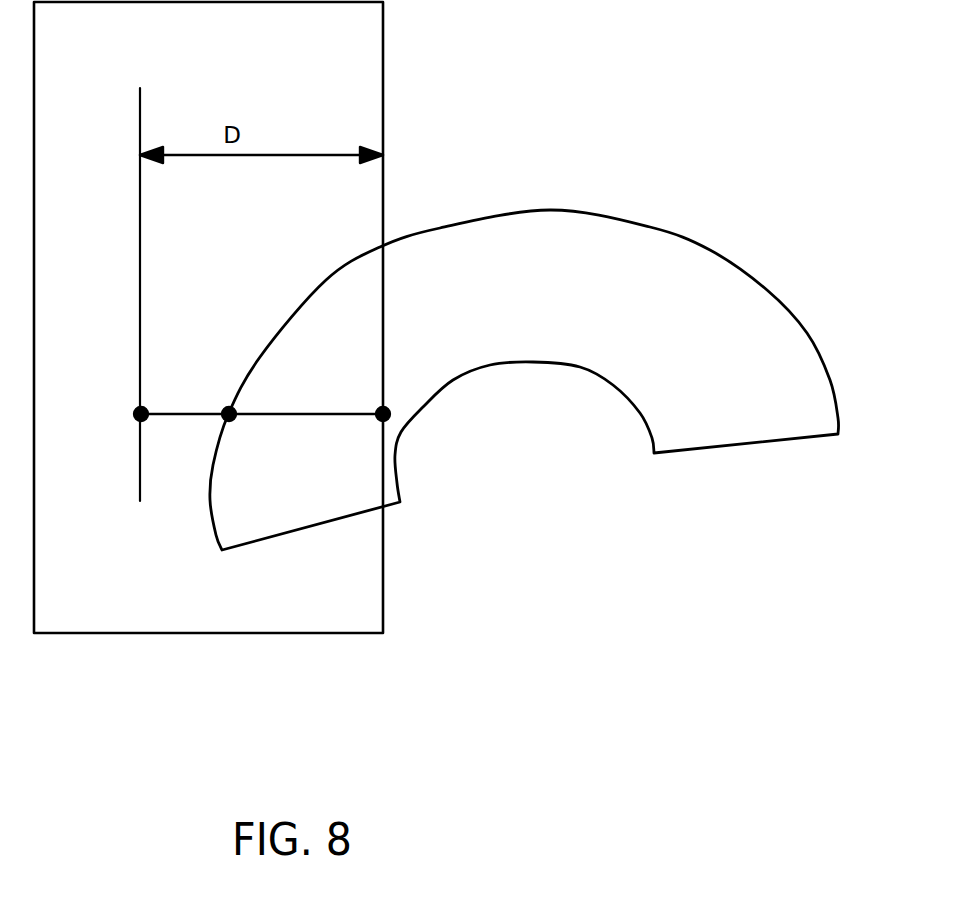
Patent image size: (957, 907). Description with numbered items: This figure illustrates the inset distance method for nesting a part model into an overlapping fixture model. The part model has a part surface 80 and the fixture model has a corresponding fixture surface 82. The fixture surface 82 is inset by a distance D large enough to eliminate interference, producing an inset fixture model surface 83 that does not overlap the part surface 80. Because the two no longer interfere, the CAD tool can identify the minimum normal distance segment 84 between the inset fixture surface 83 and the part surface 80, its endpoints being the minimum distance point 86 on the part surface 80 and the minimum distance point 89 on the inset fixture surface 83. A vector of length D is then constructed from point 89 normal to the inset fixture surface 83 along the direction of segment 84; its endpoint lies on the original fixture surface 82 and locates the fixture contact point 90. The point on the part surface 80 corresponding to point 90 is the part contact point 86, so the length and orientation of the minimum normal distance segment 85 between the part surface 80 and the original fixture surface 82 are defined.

The part surface 80 is at (598, 213).
The fixture surface 82 is at (383, 43).
The inset fixture model surface 83 is at (139, 218).
The minimum normal distance segment 84 is at (183, 413).
The minimum normal distance segment 85 is at (293, 413).
The part contact point 86 is at (224, 418).
The minimum distance point 89 is at (142, 422).
The fixture contact point 90 is at (386, 405).